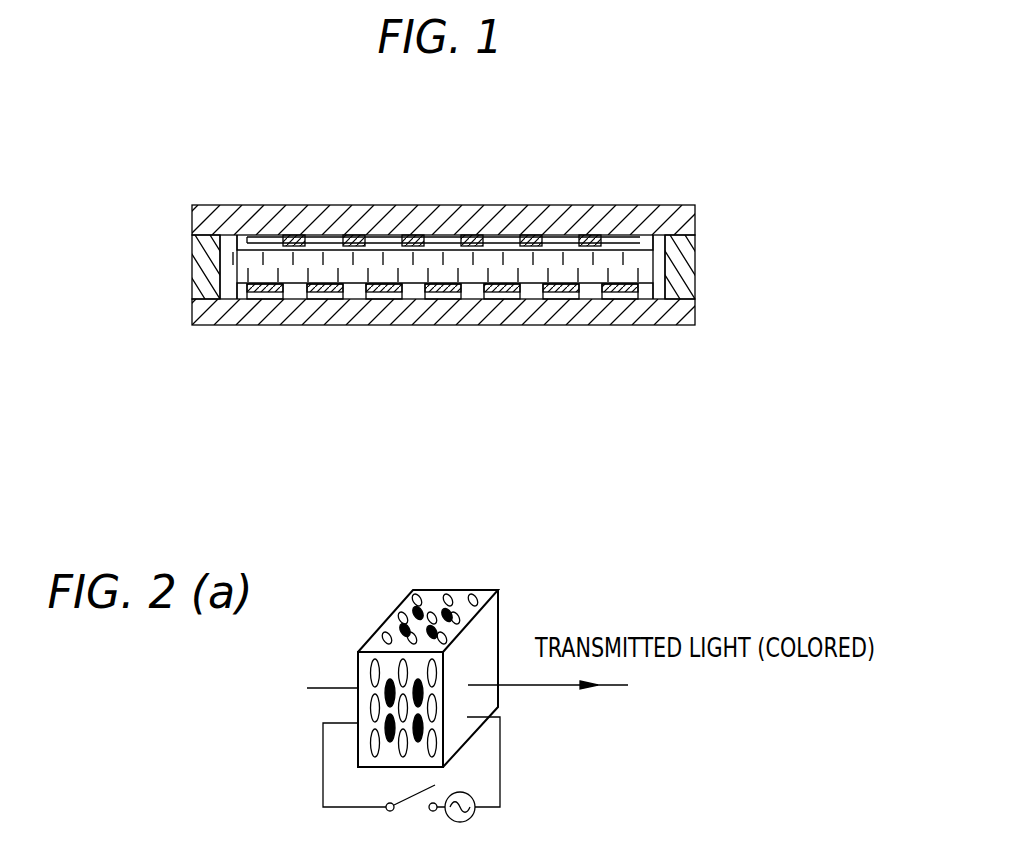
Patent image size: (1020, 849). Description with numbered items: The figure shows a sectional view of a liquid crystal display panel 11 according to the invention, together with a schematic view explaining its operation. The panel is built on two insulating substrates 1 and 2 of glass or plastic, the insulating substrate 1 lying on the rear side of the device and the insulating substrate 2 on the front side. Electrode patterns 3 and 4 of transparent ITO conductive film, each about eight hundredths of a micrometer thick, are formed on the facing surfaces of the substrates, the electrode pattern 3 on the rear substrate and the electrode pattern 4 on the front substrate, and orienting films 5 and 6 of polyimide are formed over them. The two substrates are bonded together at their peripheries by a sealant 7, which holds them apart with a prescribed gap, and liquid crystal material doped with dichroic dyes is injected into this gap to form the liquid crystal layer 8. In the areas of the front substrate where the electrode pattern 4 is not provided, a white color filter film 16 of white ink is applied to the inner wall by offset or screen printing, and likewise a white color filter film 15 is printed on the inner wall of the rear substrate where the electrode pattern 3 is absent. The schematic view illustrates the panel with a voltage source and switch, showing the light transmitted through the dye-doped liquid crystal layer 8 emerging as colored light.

The insulating substrate 1 is at (420, 323).
The insulating substrate 2 is at (438, 207).
The electrode pattern 3 is at (372, 300).
The electrode pattern 4 is at (487, 237).
The orienting film 5 is at (299, 300).
The orienting film 6 is at (245, 235).
The sealant 7 is at (678, 297).
The liquid crystal layer 8 is at (658, 295).
The liquid crystal display panel 11 is at (622, 190).
The white color filter film 15 is at (497, 300).
The white color filter film 16 is at (295, 237).